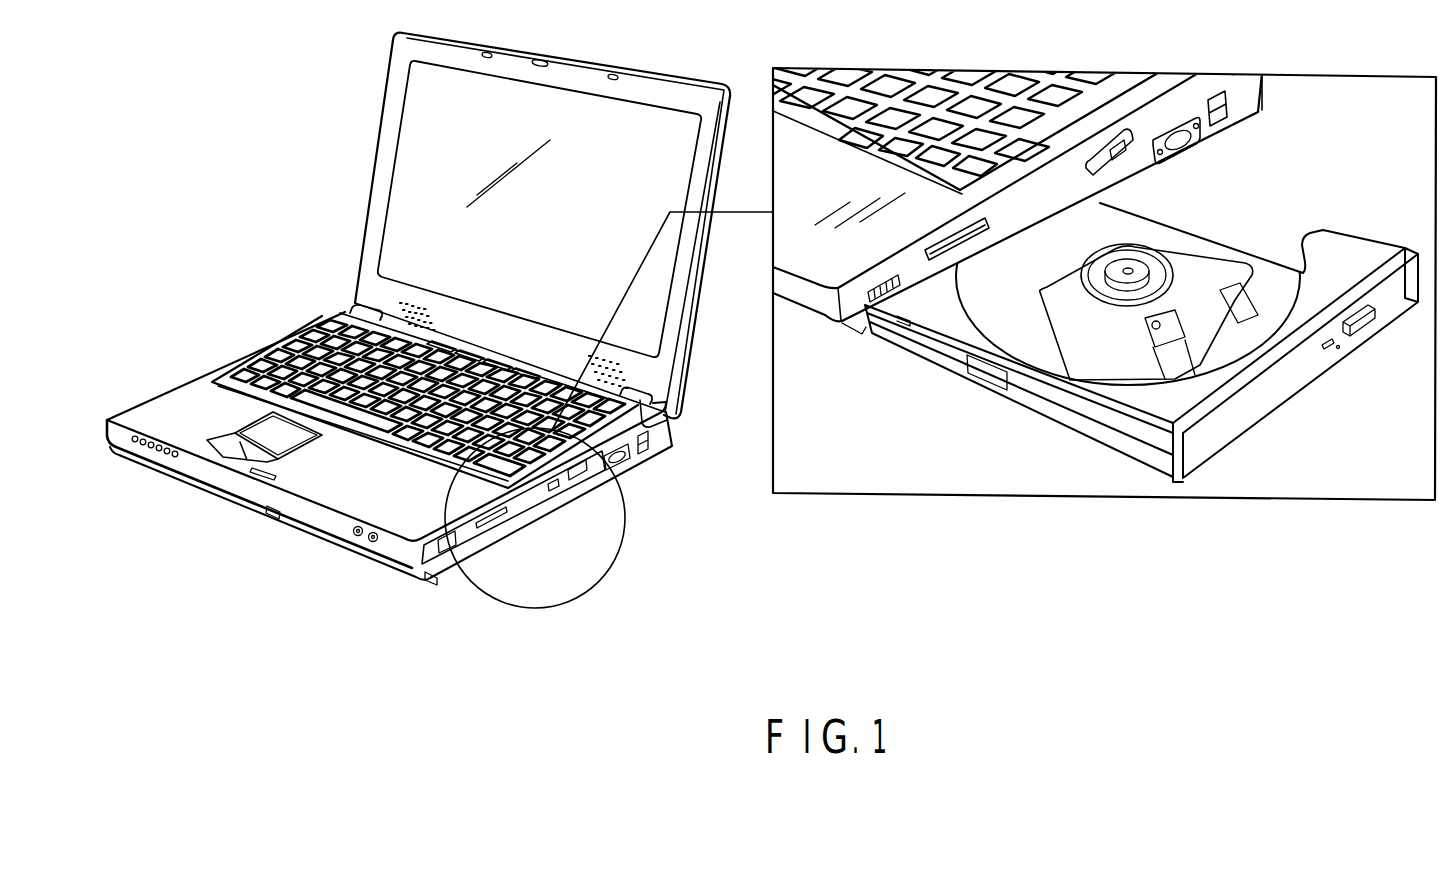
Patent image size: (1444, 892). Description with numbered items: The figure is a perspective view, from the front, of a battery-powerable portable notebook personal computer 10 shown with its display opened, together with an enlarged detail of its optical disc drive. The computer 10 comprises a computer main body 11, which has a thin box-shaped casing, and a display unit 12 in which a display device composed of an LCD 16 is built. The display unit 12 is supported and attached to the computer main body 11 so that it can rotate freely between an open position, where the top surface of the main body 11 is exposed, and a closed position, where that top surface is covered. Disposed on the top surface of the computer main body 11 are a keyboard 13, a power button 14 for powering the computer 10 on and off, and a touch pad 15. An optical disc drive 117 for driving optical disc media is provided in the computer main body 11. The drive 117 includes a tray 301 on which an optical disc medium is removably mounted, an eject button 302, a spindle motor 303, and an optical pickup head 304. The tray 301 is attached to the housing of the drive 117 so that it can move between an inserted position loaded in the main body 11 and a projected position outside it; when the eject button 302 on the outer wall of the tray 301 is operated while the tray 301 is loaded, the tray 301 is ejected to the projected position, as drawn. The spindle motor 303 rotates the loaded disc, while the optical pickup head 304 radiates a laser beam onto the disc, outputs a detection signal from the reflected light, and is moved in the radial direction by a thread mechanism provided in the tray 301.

The portable notebook personal computer 10 is at (303, 306).
The computer main body 11 is at (399, 553).
The display unit 12 is at (690, 288).
The keyboard 13 is at (277, 347).
The power button 14 is at (451, 340).
The touch pad 15 is at (288, 440).
The LCD 16 is at (650, 127).
The optical disc drive 117 is at (507, 527).
The tray 301 is at (1140, 223).
The eject button 302 is at (1357, 327).
The spindle motor 303 is at (1172, 283).
The optical pickup head 304 is at (1144, 326).